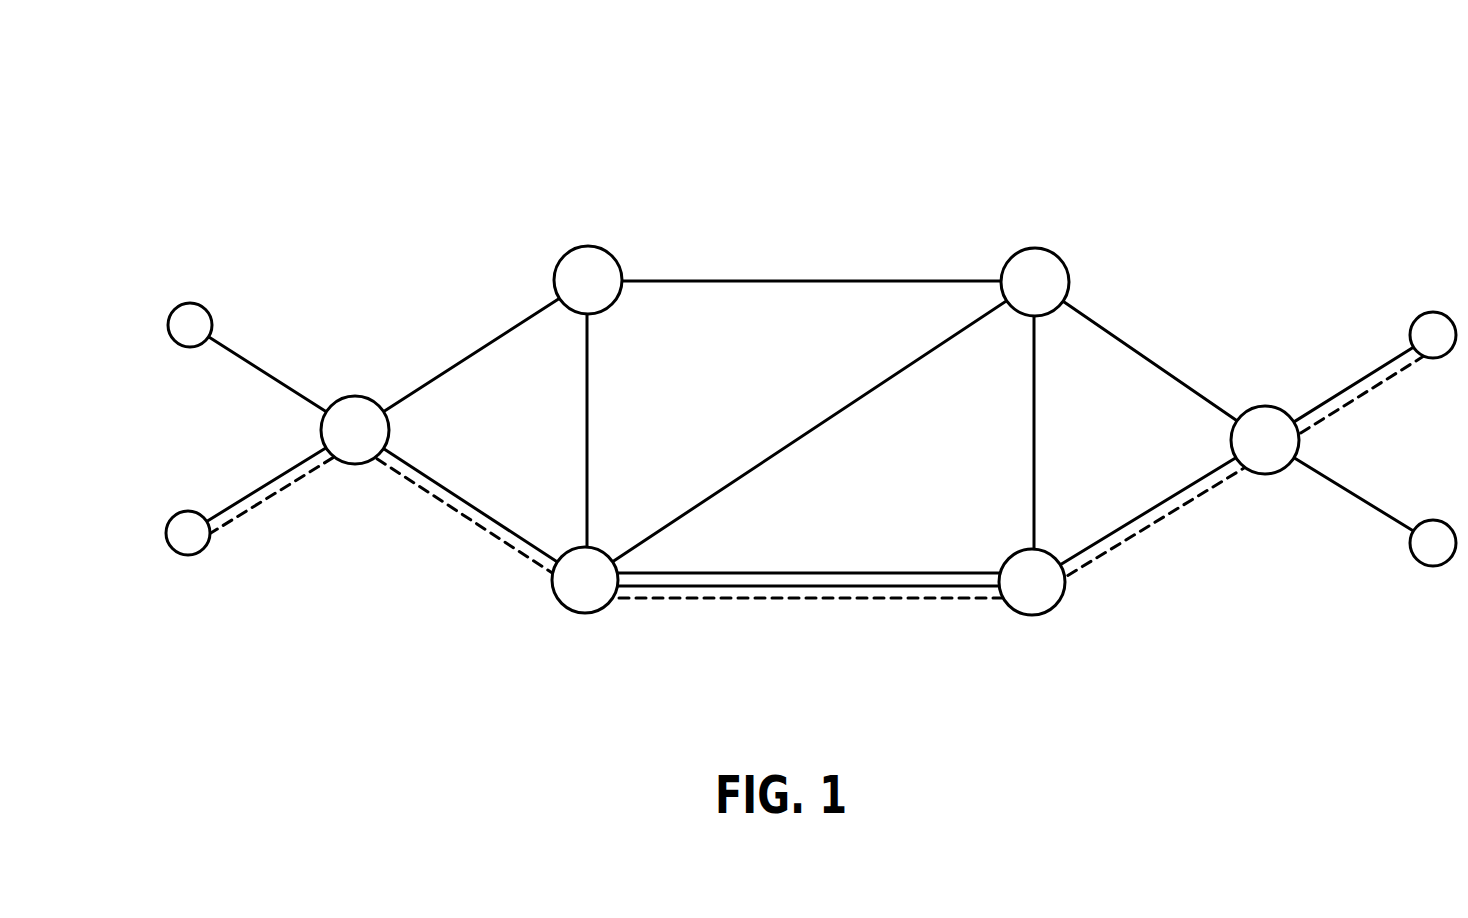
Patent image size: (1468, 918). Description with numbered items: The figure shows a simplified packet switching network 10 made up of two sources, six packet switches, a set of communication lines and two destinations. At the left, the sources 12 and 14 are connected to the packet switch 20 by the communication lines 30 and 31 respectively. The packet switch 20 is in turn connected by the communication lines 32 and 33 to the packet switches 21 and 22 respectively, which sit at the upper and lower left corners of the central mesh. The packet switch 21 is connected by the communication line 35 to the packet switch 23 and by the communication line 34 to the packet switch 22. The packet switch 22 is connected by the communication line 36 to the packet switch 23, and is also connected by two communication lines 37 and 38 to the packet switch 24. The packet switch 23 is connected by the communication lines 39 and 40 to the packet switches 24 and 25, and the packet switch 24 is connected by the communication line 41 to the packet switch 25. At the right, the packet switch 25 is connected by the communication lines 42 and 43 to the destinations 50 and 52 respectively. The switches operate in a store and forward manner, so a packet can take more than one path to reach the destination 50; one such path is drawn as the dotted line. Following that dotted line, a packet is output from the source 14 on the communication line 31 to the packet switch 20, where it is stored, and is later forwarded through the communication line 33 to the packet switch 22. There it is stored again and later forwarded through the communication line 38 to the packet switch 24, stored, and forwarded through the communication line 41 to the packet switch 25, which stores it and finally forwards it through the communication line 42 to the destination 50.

The packet switching network 10 is at (495, 108).
The source 12 is at (185, 303).
The source 14 is at (187, 511).
The packet switch 20 is at (355, 396).
The packet switch 21 is at (587, 246).
The packet switch 22 is at (585, 613).
The packet switch 23 is at (1033, 248).
The packet switch 24 is at (1040, 615).
The packet switch 25 is at (1262, 403).
The communication line 30 is at (262, 370).
The communication line 31 is at (268, 487).
The communication line 32 is at (455, 365).
The communication line 33 is at (455, 497).
The communication line 34 is at (586, 418).
The communication line 35 is at (815, 279).
The communication line 36 is at (826, 419).
The communication line 37 is at (856, 572).
The communication line 38 is at (769, 600).
The communication line 39 is at (1033, 430).
The communication line 40 is at (1160, 366).
The communication line 41 is at (1160, 506).
The communication line 42 is at (1350, 386).
The communication line 43 is at (1345, 490).
The destination 50 is at (1428, 313).
The destination 52 is at (1428, 520).